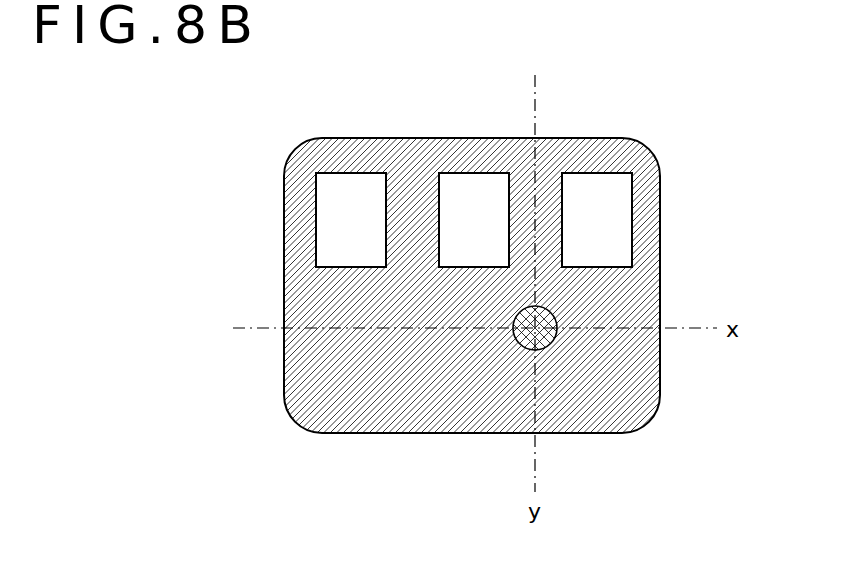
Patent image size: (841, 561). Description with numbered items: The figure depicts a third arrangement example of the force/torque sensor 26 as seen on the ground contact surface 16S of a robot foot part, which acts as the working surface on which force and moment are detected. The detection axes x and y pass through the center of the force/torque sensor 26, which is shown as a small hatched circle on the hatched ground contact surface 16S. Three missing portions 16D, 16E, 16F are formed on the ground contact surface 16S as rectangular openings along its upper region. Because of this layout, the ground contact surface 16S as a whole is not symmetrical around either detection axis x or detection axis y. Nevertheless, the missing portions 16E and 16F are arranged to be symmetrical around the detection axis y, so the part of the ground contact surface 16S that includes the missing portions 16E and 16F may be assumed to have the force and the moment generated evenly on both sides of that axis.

The ground contact surface 16S is at (298, 148).
The missing portion 16D is at (342, 172).
The missing portion 16E is at (467, 172).
The missing portion 16F is at (593, 172).
The force/torque sensor 26 is at (553, 312).